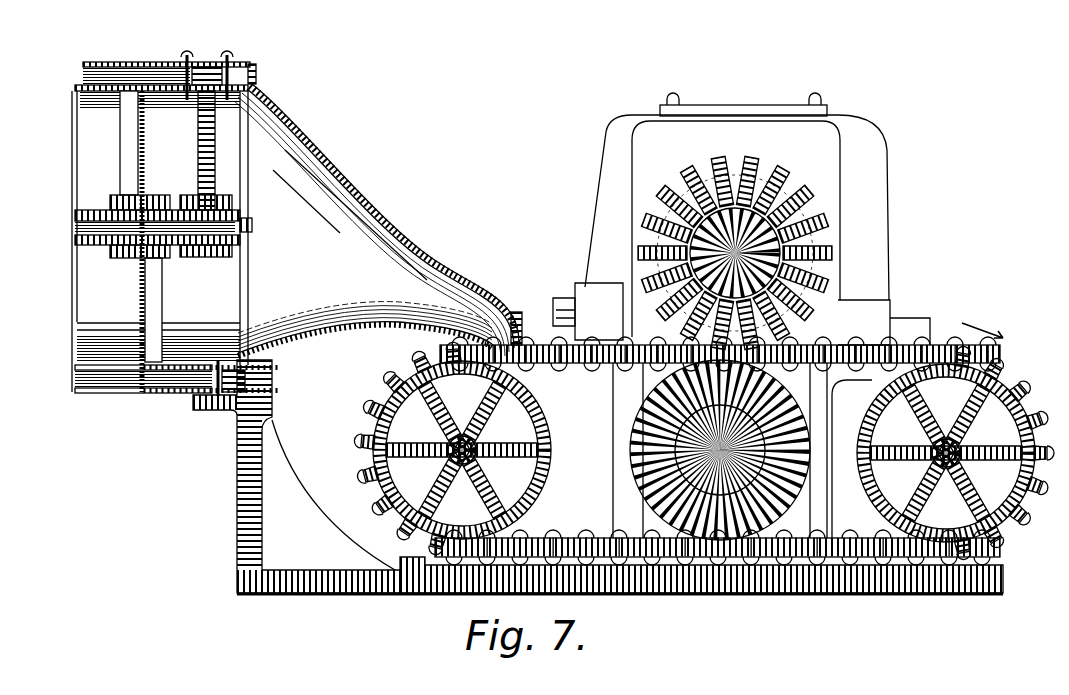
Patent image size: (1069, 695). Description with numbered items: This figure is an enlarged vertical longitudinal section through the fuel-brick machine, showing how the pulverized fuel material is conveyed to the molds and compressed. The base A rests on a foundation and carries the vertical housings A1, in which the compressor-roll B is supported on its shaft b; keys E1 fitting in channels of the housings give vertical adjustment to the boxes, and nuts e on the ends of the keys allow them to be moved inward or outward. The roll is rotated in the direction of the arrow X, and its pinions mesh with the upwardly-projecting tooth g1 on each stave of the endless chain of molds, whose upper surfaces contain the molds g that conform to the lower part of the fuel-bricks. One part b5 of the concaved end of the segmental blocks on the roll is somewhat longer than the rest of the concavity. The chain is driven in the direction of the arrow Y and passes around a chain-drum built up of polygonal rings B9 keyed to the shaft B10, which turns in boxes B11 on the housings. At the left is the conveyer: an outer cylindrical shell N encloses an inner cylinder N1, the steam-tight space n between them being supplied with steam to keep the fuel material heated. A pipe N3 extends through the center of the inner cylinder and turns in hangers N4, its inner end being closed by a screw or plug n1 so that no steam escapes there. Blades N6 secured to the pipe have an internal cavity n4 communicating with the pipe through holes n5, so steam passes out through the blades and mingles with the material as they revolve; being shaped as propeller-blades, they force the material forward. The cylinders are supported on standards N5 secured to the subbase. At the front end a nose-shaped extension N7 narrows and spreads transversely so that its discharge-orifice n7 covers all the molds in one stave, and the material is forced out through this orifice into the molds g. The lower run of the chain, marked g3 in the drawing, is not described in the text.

The cylindrical shell N is at (98, 66).
The space n is at (90, 80).
The inner cylinder N1 is at (124, 122).
The blades N6 is at (128, 158).
The internal cavity n4 is at (147, 148).
The hangers N4 is at (212, 178).
The screw or plug n1 is at (246, 226).
The pipe N3 is at (74, 272).
The holes n5 is at (113, 250).
The nose-shaped extension N7 is at (385, 228).
The discharge-orifice n7 is at (510, 308).
The nuts e is at (556, 324).
The standards N5 is at (248, 492).
The arrow X is at (609, 206).
The compressor-roll B is at (735, 252).
The vertical housings A1 is at (737, 315).
The keys E1 is at (912, 330).
The arrow Y is at (993, 339).
The tooth g1 is at (848, 348).
The part of the concaved end b5 is at (658, 314).
The molds g is at (472, 372).
The polygonal rings B9 is at (600, 358).
The lower chain run g3 is at (594, 366).
The shaft B10 is at (480, 441).
The boxes B11 is at (720, 450).
The shaft b is at (1038, 410).
The base A is at (645, 586).